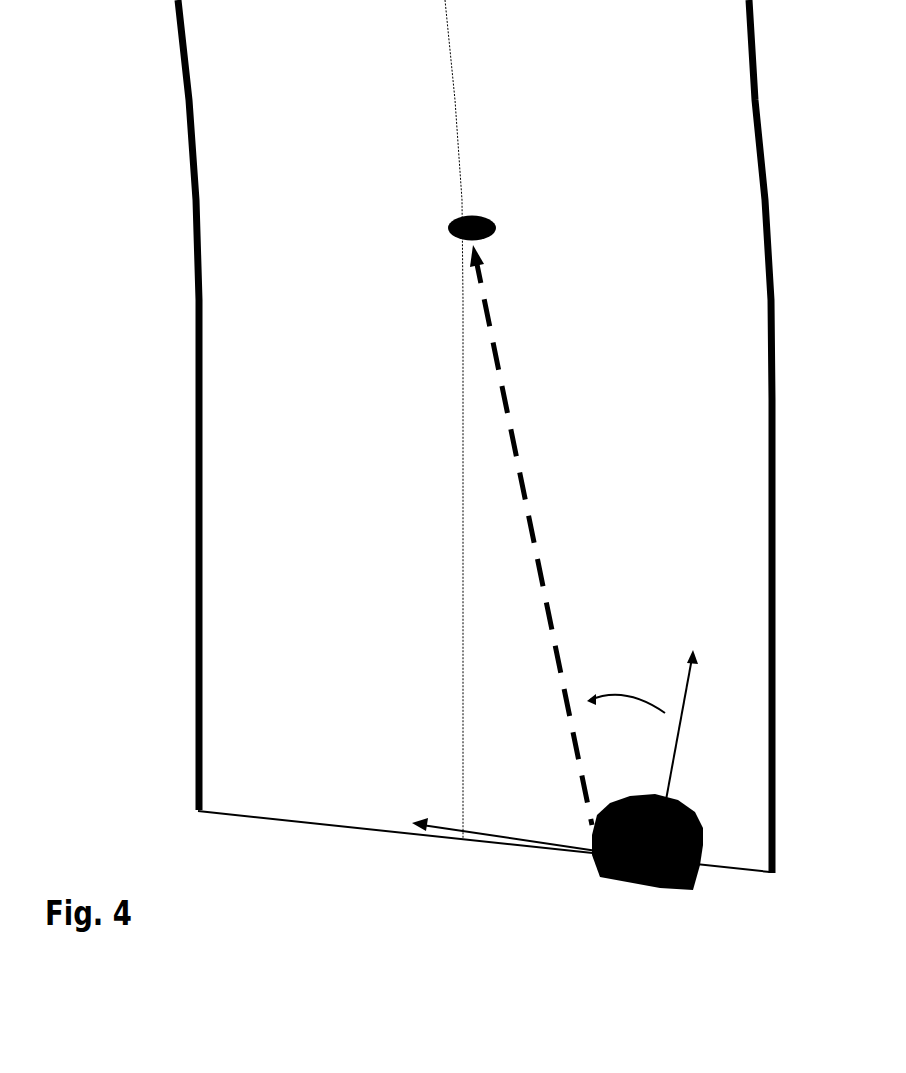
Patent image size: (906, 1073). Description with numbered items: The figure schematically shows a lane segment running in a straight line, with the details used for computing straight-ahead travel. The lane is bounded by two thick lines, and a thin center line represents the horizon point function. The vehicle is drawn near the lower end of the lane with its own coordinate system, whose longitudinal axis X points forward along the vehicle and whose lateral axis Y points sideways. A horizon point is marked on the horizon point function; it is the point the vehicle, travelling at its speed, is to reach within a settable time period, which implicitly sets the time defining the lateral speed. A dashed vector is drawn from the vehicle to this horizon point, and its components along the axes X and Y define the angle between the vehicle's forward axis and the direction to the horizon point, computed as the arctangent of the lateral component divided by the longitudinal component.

The element vehicle is at (647, 842).
The X axis X is at (663, 720).
The Y axis Y is at (503, 851).